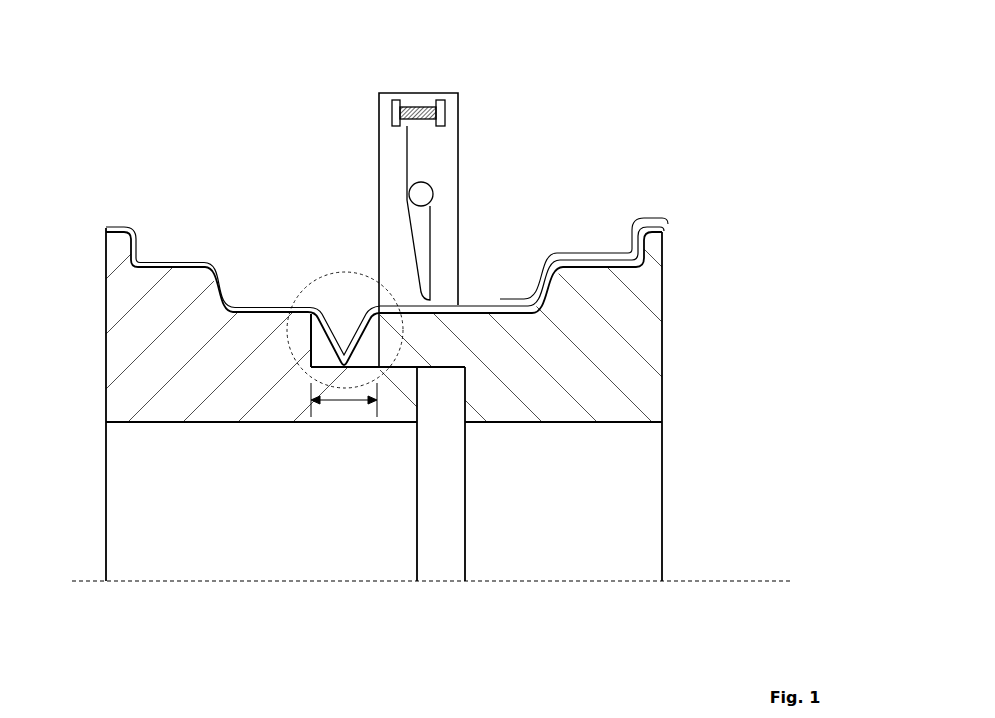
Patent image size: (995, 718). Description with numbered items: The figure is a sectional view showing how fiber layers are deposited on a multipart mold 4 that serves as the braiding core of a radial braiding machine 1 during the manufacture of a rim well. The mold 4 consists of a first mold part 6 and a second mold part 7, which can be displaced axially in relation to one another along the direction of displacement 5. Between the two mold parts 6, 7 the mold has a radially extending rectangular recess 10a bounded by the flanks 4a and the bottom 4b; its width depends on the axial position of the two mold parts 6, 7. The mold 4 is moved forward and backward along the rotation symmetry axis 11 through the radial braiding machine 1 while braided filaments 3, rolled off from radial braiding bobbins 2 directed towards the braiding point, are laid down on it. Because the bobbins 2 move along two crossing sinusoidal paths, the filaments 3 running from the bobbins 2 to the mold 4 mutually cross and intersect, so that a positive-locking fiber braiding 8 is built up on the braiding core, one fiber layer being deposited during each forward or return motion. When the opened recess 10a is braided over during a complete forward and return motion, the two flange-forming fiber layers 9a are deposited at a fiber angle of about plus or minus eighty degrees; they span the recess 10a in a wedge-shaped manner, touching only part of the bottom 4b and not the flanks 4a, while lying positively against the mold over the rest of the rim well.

The radial braiding machine 1 is at (460, 148).
The radial braiding bobbin 2 is at (393, 113).
The braided filament 3 is at (406, 160).
The multipart mold 4 is at (408, 403).
The flank 4a is at (311, 343).
The bottom 4b is at (335, 368).
The direction of displacement 5 is at (407, 601).
The first mold part 6 is at (125, 322).
The second mold part 7 is at (641, 302).
The fiber braiding 8 is at (387, 284).
The flange-forming fiber layer 9a is at (578, 253).
The rectangular recess 10a is at (318, 277).
The rotation symmetry axis 11 is at (711, 580).